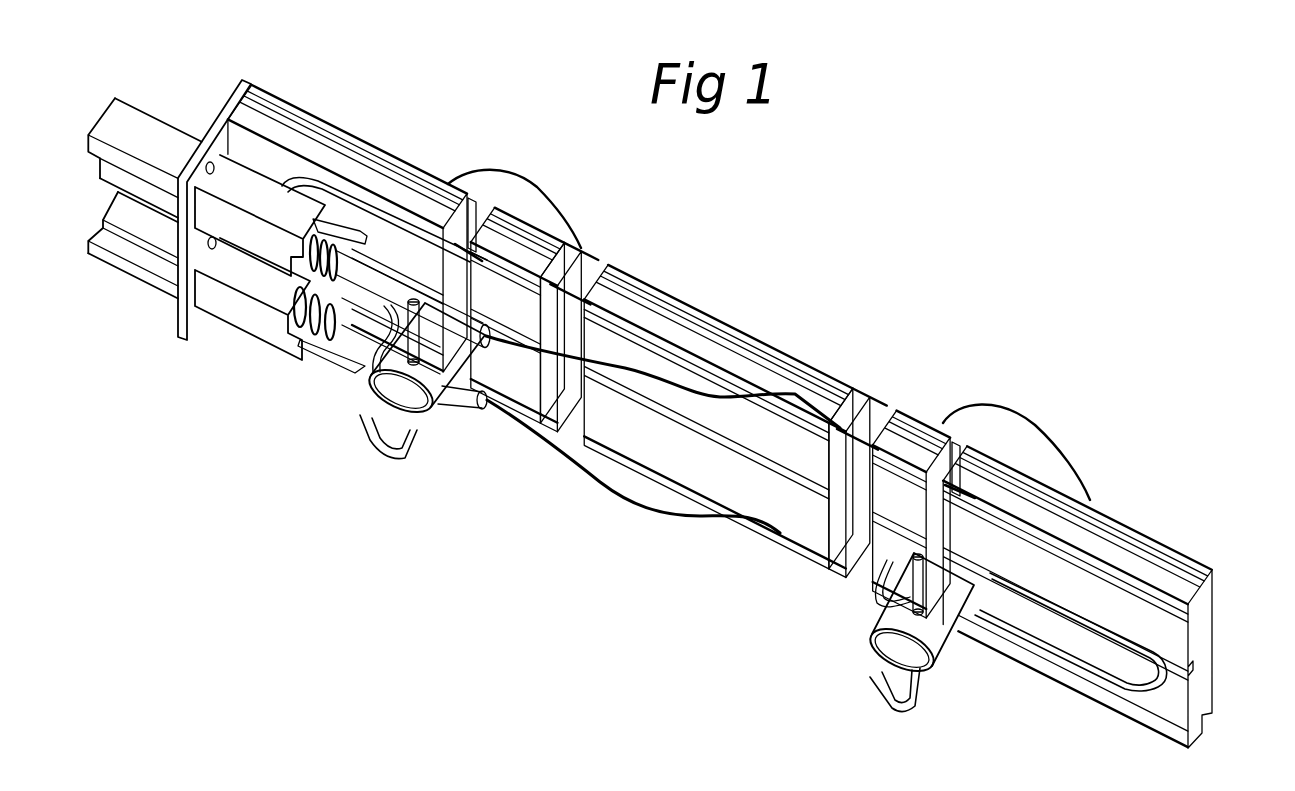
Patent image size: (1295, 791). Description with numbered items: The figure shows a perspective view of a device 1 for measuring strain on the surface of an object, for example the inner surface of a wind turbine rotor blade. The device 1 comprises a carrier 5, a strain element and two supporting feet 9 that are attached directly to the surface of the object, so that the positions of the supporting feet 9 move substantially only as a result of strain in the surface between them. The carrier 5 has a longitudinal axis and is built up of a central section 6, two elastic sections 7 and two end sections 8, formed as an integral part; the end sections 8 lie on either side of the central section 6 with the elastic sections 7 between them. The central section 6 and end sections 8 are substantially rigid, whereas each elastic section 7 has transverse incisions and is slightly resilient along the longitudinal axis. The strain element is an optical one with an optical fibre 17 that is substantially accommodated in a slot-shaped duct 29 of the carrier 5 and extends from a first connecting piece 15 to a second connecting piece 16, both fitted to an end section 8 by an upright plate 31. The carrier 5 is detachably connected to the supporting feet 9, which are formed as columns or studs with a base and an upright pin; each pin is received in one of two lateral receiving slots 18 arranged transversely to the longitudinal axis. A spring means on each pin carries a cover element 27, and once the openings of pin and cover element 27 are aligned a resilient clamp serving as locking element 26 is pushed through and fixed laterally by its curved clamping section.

The device 1 is at (751, 390).
The carrier 5 is at (1177, 587).
The central section 6 is at (627, 355).
The elastic section 7 is at (592, 260).
The end section 8 is at (268, 152).
The supporting foot 9 is at (522, 200).
The first connecting piece 15 is at (130, 127).
The second connecting piece 16 is at (138, 260).
The optical fibre 17 is at (615, 482).
The lateral receiving slot 18 is at (478, 217).
The locking element 26 is at (370, 433).
The cover element 27 is at (432, 392).
The slot-shaped duct 29 is at (690, 360).
The upright plate 31 is at (177, 337).